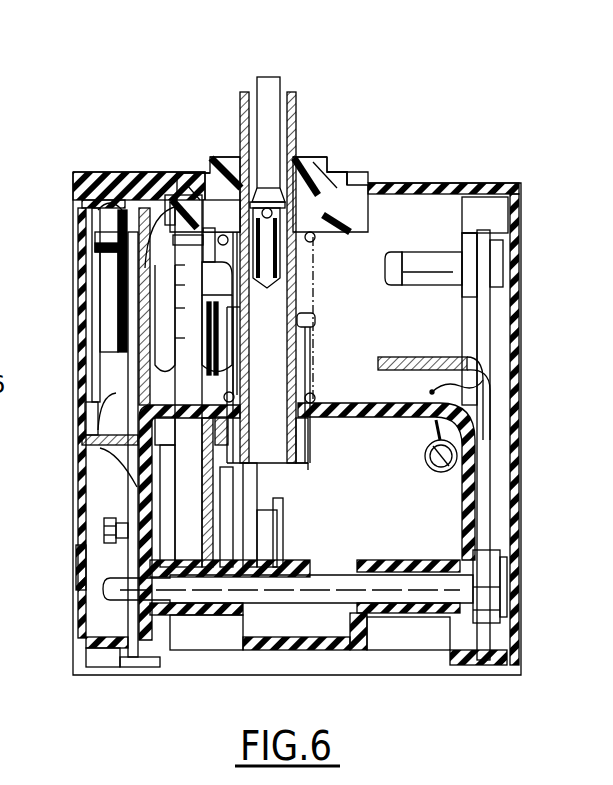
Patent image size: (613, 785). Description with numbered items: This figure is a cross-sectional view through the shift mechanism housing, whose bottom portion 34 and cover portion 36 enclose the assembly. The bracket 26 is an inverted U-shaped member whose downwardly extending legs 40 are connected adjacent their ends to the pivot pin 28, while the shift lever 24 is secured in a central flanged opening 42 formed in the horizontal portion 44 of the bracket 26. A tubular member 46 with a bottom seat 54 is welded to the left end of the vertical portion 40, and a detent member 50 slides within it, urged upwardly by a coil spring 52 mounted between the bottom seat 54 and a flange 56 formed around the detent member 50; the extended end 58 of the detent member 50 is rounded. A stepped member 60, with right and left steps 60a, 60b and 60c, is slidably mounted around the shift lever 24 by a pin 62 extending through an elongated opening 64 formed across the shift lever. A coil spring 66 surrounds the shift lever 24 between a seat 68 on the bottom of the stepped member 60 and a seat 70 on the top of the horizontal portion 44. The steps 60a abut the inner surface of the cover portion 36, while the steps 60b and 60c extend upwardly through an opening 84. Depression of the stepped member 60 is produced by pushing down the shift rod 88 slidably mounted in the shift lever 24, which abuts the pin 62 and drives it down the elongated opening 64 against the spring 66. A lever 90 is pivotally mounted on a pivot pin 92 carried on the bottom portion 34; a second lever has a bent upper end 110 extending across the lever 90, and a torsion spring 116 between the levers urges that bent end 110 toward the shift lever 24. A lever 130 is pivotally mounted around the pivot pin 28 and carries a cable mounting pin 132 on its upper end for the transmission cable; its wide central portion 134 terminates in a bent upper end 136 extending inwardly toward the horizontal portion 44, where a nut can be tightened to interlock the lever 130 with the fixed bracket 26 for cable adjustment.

The shift lever 24 is at (298, 92).
The bracket 26 is at (350, 383).
The pivot pin 28 is at (318, 570).
The bottom portion 34 is at (73, 448).
The cover portion 36 is at (470, 183).
The leg 40 is at (128, 487).
The central flanged opening 42 is at (308, 453).
The horizontal portion 44 is at (359, 403).
The tubular member 46 is at (86, 307).
The detent member 50 is at (100, 268).
The coil spring 52 is at (90, 360).
The bottom seat 54 is at (98, 387).
The flange 56 is at (92, 238).
The extended end 58 is at (85, 176).
The stepped member 60 is at (183, 128).
The step 60a is at (177, 173).
The step 60b is at (197, 173).
The step 60c is at (216, 157).
The pin 62 is at (250, 201).
The elongated opening 64 is at (300, 250).
The coil spring 66 is at (314, 292).
The seat 68 is at (366, 222).
The seat 70 is at (317, 418).
The opening 84 is at (350, 172).
The shift rod 88 is at (268, 77).
The lever 90 is at (202, 342).
The pivot pin 92 is at (104, 521).
The bent upper end 110 is at (120, 213).
The torsion spring 116 is at (43, 567).
The lever 130 is at (463, 303).
The cable mounting pin 132 is at (420, 252).
The wide central portion 134 is at (430, 387).
The bent upper end 136 is at (436, 357).